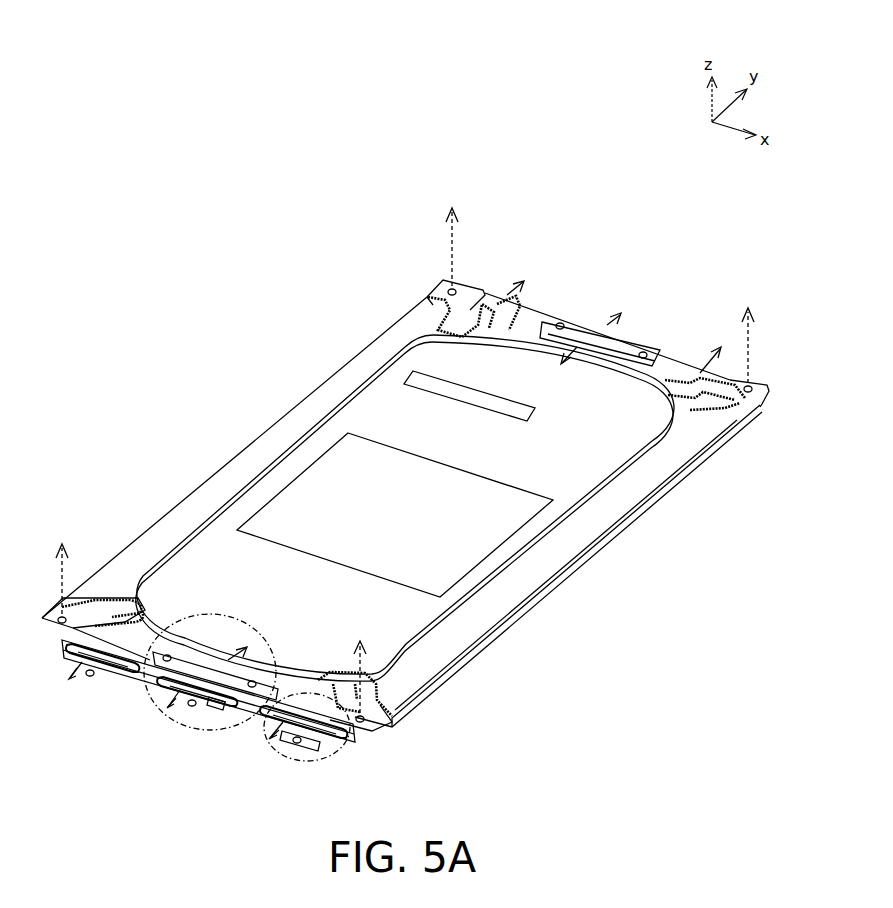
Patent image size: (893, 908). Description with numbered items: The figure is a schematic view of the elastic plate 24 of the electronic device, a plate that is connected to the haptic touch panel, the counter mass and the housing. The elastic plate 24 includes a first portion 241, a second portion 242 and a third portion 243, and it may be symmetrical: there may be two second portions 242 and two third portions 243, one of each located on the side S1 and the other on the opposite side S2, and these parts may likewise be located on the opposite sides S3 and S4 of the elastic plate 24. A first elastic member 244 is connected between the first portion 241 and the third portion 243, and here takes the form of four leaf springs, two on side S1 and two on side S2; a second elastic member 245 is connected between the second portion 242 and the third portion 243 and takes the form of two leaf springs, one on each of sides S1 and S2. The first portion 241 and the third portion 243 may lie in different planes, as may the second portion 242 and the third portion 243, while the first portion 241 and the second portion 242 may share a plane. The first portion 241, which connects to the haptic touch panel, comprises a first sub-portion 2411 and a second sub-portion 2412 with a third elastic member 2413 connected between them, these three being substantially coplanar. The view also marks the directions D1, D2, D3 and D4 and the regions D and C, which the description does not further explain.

The elastic plate 24 is at (52, 46).
The first portion 241 is at (484, 182).
The first sub-portion 2411 is at (448, 283).
The second sub-portion 2412 is at (372, 357).
The third elastic member 2413 is at (463, 323).
The second portion 242 is at (578, 333).
The third portion 243 is at (128, 682).
The first elastic member 244 is at (63, 643).
The second elastic member 245 is at (218, 705).
The side S1 is at (140, 773).
The side S2 is at (640, 293).
The side S3 is at (233, 433).
The side S4 is at (580, 588).
The first direction D1 is at (60, 567).
The second direction D2 is at (82, 612).
The third direction D3 is at (161, 711).
The fourth direction D4 is at (240, 645).
The region D is at (185, 723).
The region C is at (350, 740).